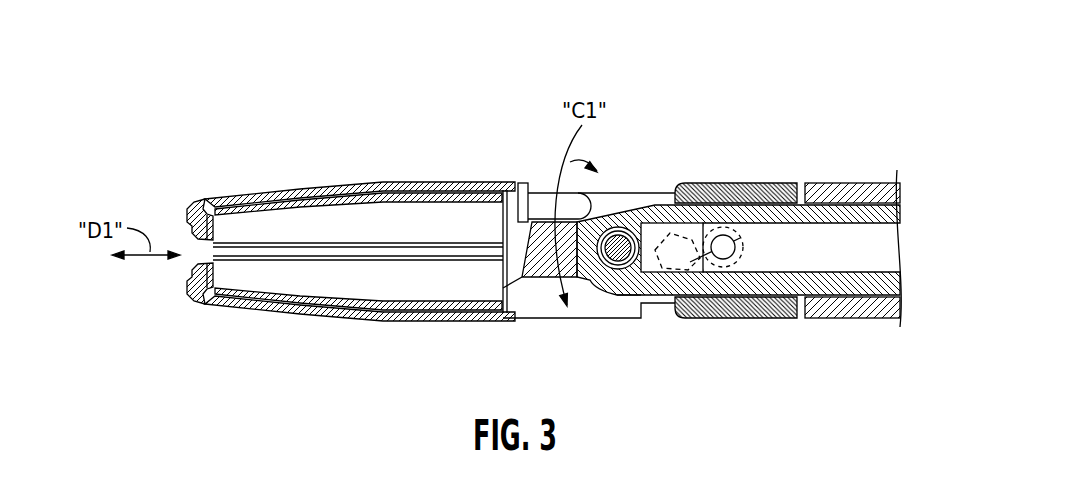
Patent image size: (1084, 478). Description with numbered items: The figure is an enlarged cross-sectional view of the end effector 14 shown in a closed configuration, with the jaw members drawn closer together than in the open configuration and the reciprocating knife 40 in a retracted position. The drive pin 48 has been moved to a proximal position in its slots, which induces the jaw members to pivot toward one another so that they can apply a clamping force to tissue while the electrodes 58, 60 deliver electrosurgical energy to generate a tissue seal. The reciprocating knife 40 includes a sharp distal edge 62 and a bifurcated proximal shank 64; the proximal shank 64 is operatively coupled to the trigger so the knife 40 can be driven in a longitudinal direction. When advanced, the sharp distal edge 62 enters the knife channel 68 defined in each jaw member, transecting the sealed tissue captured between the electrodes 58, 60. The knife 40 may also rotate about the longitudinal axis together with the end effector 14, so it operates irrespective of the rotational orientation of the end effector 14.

The end effector 14 is at (662, 106).
The reciprocating knife 40 is at (716, 240).
The drive pin 48 is at (820, 213).
The electrode 58 is at (262, 248).
The electrode 60 is at (262, 248).
The sharp distal edge 62 is at (520, 240).
The bifurcated proximal shank 64 is at (822, 182).
The knife channel 68 is at (310, 227).